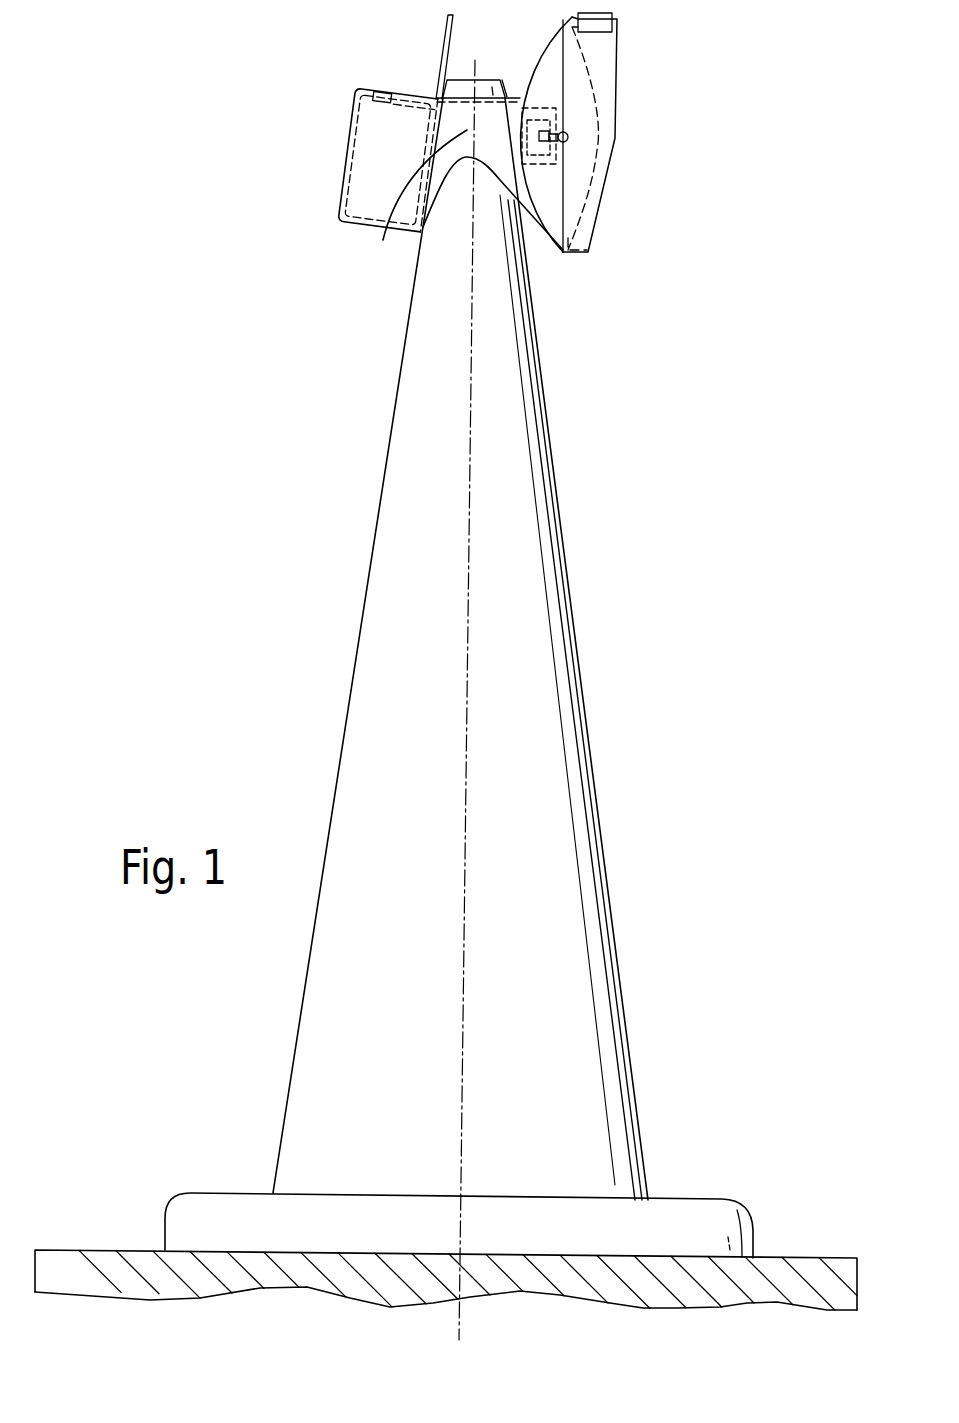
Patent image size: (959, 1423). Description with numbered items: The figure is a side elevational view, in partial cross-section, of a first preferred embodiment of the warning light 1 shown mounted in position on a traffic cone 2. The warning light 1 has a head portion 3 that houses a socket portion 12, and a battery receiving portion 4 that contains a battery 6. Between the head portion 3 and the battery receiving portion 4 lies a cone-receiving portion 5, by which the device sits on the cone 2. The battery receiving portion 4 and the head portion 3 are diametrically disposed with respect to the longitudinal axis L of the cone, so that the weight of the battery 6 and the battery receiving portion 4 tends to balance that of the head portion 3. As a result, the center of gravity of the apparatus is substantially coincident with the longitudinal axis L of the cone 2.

The warning light 1 is at (662, 92).
The traffic cone 2 is at (580, 748).
The head portion 3 is at (565, 253).
The battery receiving portion 4 is at (342, 173).
The cone-receiving portion 5 is at (422, 201).
The battery 6 is at (363, 122).
The socket portion 12 is at (568, 138).
The longitudinal axis L is at (463, 1032).